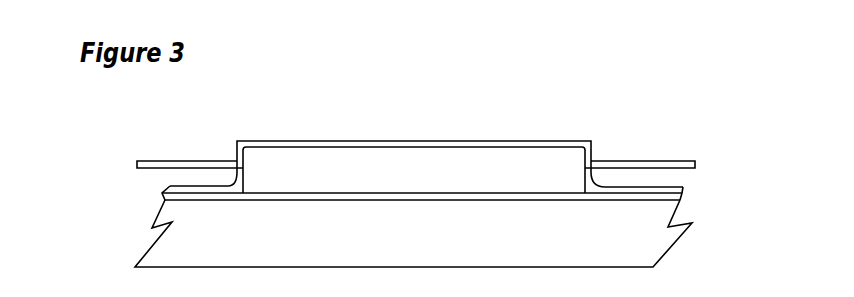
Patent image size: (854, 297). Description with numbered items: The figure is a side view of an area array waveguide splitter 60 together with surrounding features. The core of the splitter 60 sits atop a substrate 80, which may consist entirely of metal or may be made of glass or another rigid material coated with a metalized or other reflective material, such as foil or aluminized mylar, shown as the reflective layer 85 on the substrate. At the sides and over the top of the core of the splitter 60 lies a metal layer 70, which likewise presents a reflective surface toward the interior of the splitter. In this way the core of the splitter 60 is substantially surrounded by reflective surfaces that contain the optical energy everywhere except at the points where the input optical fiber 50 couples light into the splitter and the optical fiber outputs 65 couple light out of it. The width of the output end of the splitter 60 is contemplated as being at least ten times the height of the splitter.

The input optical fiber 50 is at (134, 169).
The area array waveguide splitter 60 is at (373, 140).
The optical fiber outputs 65 is at (670, 160).
The metal layer 70 is at (308, 140).
The substrate 80 is at (413, 233).
The reflective layer 85 is at (155, 206).